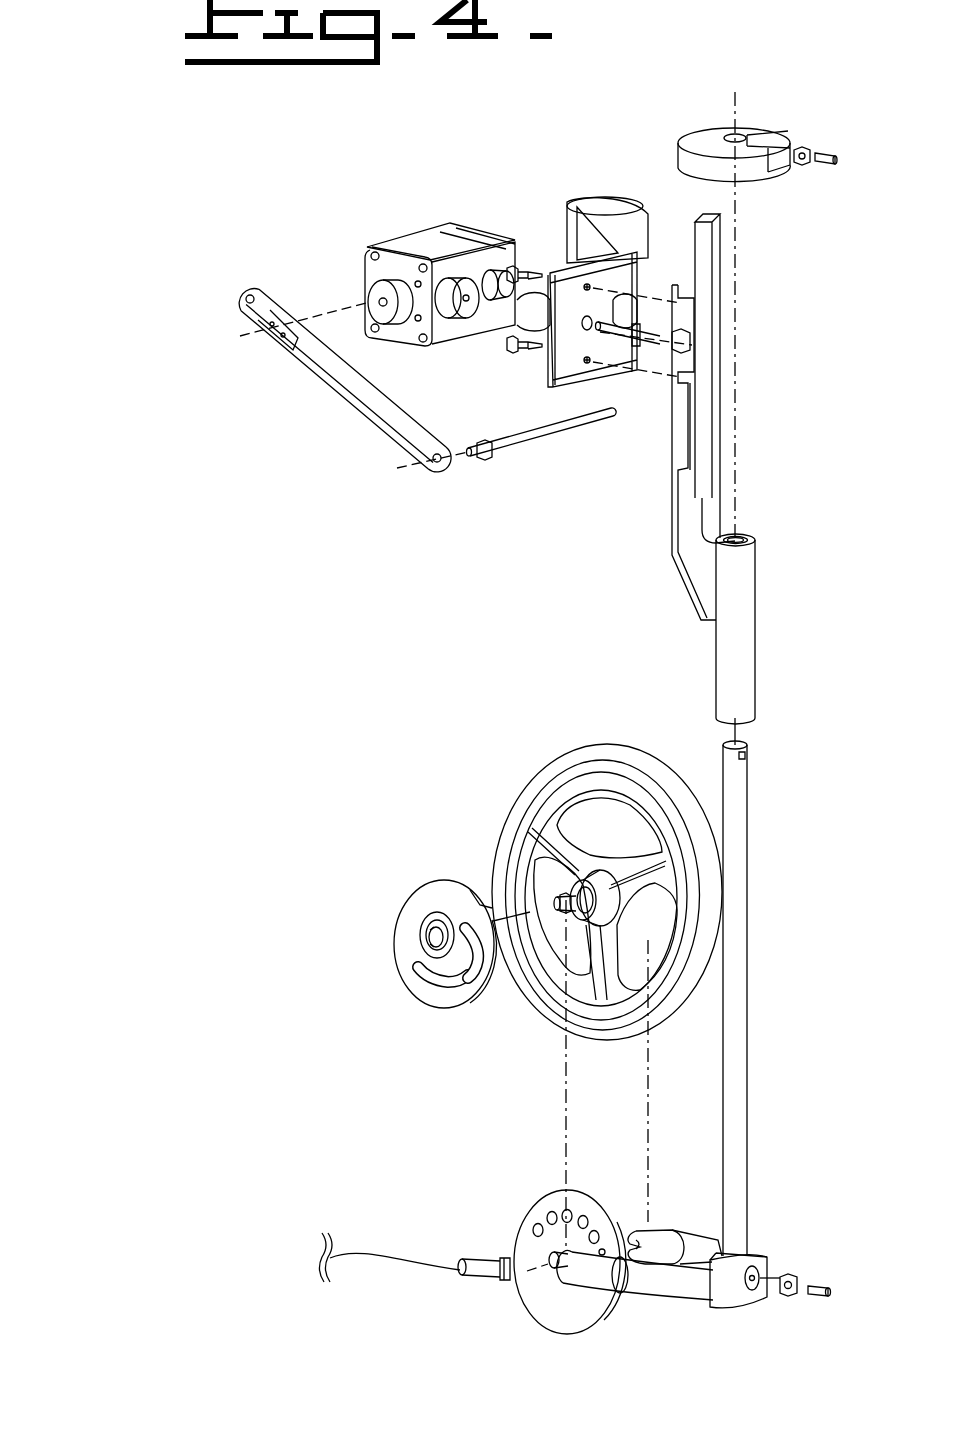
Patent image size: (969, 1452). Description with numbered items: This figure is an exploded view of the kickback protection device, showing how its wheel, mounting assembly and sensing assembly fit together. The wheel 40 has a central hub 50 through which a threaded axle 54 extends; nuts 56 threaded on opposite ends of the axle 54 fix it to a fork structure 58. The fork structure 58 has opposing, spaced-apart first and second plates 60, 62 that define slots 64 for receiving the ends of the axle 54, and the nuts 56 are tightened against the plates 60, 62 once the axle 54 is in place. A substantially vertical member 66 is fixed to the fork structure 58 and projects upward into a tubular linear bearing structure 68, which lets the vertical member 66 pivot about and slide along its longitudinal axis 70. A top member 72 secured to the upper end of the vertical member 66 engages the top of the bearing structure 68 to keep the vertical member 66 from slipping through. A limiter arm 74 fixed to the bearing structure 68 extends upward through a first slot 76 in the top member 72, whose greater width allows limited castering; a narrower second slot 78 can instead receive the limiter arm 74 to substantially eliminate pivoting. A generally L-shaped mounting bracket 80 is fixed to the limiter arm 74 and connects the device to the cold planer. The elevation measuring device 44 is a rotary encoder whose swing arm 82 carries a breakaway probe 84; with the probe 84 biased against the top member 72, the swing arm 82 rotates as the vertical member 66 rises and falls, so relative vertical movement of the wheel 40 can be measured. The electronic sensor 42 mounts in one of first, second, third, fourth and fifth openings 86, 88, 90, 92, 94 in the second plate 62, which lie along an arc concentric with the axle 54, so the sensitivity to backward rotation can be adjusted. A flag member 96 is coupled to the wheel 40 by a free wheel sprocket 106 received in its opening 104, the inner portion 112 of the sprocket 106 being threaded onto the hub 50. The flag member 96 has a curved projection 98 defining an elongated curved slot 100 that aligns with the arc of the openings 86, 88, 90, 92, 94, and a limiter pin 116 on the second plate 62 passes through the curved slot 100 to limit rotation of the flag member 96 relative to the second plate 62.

The wheel 40 is at (581, 891).
The electronic sensor 42 is at (473, 1262).
The elevation measuring device 44 is at (408, 224).
The central hub 50 is at (590, 1005).
The threaded axle 54 is at (530, 913).
The nuts 56 is at (560, 904).
The fork structure 58 is at (694, 1269).
The first plate 60 is at (650, 1230).
The second plate 62 is at (551, 1223).
The slots 64 is at (550, 1265).
The substantially vertical member 66 is at (747, 840).
The tubular linear bearing structure 68 is at (755, 620).
The longitudinal axis 70 is at (737, 262).
The top member 72 is at (770, 130).
The limiter arm 74 is at (685, 392).
The first slot 76 is at (718, 133).
The second slot 78 is at (775, 148).
The mounting bracket 80 is at (570, 232).
The swing arm 82 is at (335, 392).
The breakaway probe 84 is at (517, 440).
The first opening 86 is at (596, 1232).
The second opening 88 is at (582, 1216).
The third opening 90 is at (565, 1211).
The fourth opening 92 is at (550, 1214).
The fifth opening 94 is at (536, 1226).
The flag member 96 is at (419, 961).
The curved projection 98 is at (437, 1006).
The elongated curved slot 100 is at (466, 976).
The opening 104 is at (426, 933).
The free wheel sprocket 106 is at (423, 918).
The inner portion 112 is at (429, 945).
The limiter pin 116 is at (624, 1293).